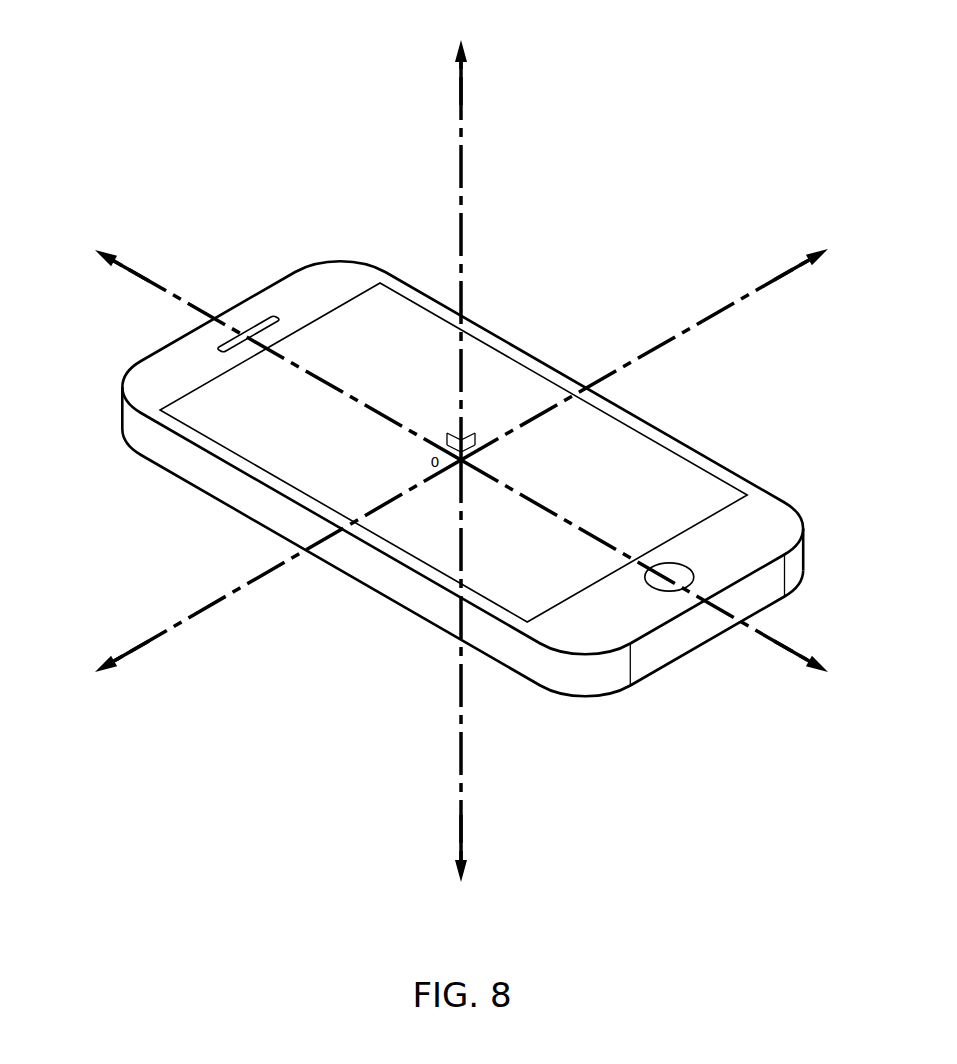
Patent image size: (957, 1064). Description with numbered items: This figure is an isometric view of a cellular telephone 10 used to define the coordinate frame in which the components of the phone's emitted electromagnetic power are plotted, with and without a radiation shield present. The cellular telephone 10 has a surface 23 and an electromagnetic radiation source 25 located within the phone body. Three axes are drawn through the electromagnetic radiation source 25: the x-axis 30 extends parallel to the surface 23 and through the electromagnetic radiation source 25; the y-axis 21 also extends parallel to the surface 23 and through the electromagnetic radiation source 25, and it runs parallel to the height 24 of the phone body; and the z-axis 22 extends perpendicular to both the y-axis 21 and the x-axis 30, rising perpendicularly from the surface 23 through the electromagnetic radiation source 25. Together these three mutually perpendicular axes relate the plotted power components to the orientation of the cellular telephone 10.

The cellular telephone 10 is at (805, 563).
The y-axis 21 is at (132, 275).
The z-axis 22 is at (460, 152).
The x-axis 30 is at (788, 275).
The surface 23 is at (773, 510).
The height 24 is at (583, 387).
The electromagnetic radiation source 25 is at (465, 461).